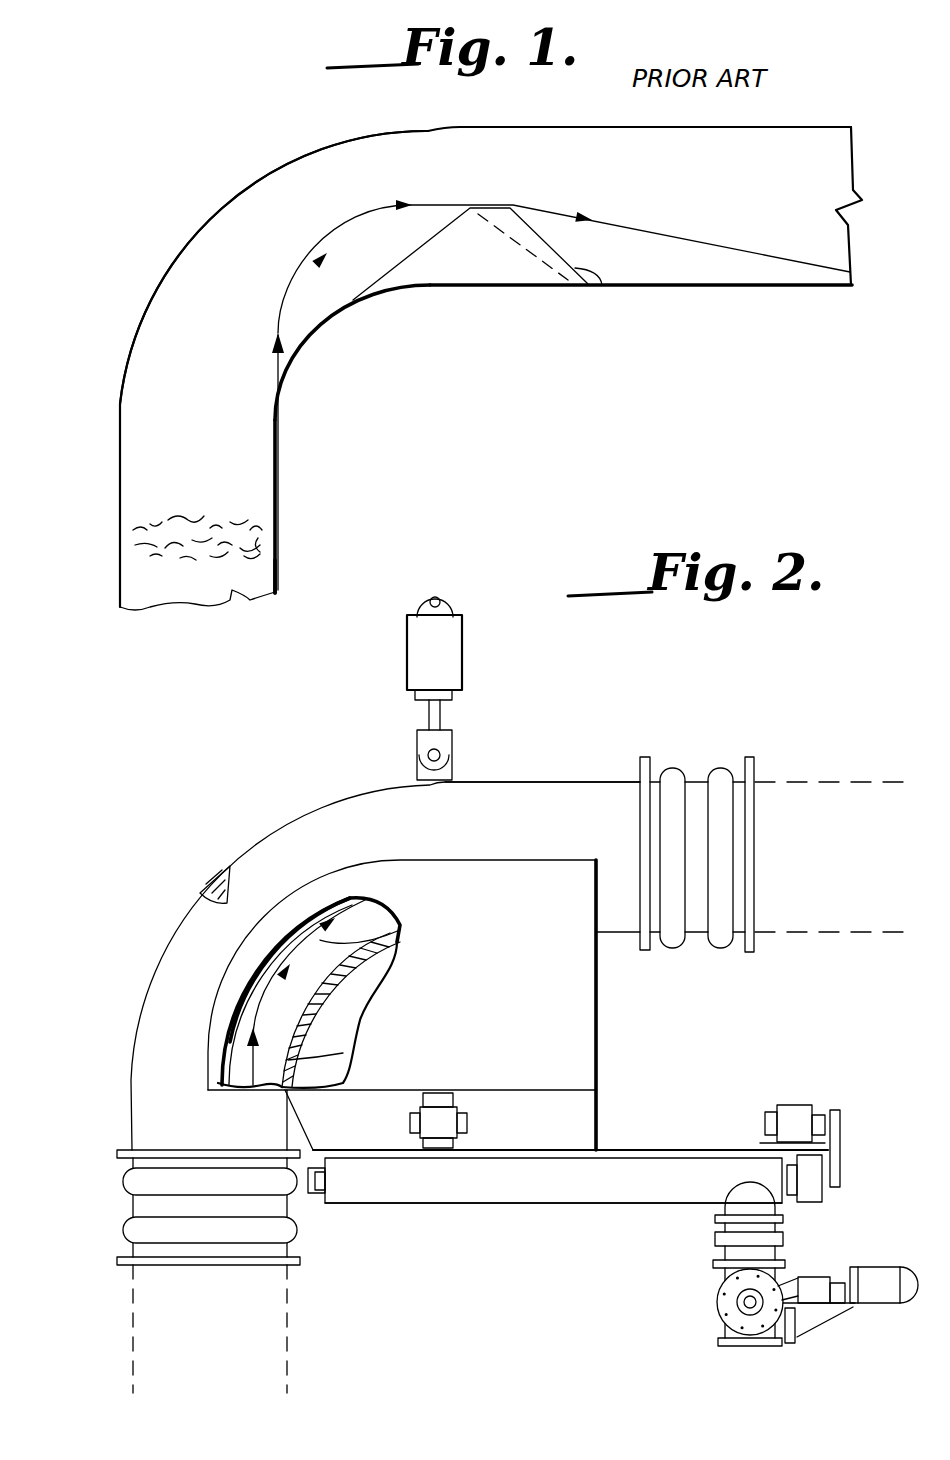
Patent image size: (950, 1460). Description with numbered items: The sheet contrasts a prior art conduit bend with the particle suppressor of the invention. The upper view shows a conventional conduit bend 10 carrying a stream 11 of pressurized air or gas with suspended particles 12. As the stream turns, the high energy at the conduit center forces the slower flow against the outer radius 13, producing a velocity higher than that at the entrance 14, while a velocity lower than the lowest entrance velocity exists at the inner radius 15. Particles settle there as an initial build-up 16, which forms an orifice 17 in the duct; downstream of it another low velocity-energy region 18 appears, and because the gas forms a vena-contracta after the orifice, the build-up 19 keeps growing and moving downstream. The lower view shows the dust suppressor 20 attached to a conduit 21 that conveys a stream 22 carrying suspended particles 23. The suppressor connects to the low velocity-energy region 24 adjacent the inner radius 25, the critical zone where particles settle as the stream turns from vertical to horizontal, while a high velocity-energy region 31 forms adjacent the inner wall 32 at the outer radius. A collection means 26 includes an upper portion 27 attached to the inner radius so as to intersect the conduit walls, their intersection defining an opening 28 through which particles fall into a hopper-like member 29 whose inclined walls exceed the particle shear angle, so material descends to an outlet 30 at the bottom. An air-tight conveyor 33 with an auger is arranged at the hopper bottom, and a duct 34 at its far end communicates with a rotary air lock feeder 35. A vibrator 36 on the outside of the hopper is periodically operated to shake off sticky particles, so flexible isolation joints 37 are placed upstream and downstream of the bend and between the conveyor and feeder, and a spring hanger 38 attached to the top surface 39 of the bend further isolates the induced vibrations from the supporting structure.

In FIG. 1, the conduit bend 10 is at (170, 165).
In FIG. 1, the stream 11 is at (140, 367).
In FIG. 1, the suspended particles 12 is at (276, 515).
In FIG. 1, the outer radius 13 is at (250, 182).
In FIG. 1, the entrance 14 is at (276, 586).
In FIG. 1, the inner radius 15 is at (316, 336).
In FIG. 1, the initial build-up 16 is at (460, 265).
In FIG. 1, the orifice 17 is at (512, 168).
In FIG. 1, the low velocity-energy region 18 is at (683, 268).
In FIG. 1, the initial build-up 19 is at (588, 288).
In FIG. 2, the dust suppressor 20 is at (640, 1029).
In FIG. 2, the conduit 21 is at (152, 967).
In FIG. 2, the stream 22 is at (322, 940).
In FIG. 2, the suspended particles 23 is at (222, 1068).
In FIG. 2, the low velocity-energy region 24 is at (328, 958).
In FIG. 2, the inner radius 25 is at (343, 1053).
In FIG. 2, the collection means 26 is at (612, 1067).
In FIG. 2, the upper portion 27 is at (598, 980).
In FIG. 2, the opening 28 is at (300, 1023).
In FIG. 2, the hopper-like member 29 is at (600, 1120).
In FIG. 2, the outlet 30 is at (557, 1155).
In FIG. 2, the high velocity-energy region 31 is at (307, 925).
In FIG. 2, the inner wall 32 is at (205, 882).
In FIG. 2, the air-tight conveyor 33 is at (450, 1205).
In FIG. 2, the duct 34 is at (765, 1256).
In FIG. 2, the rotary air lock feeder 35 is at (718, 1302).
In FIG. 2, the vibrator 36 is at (440, 1120).
In FIG. 2, the flexible isolation joints 37 is at (673, 776).
In FIG. 2, the spring hanger 38 is at (462, 662).
In FIG. 2, the top surface 39 is at (490, 782).